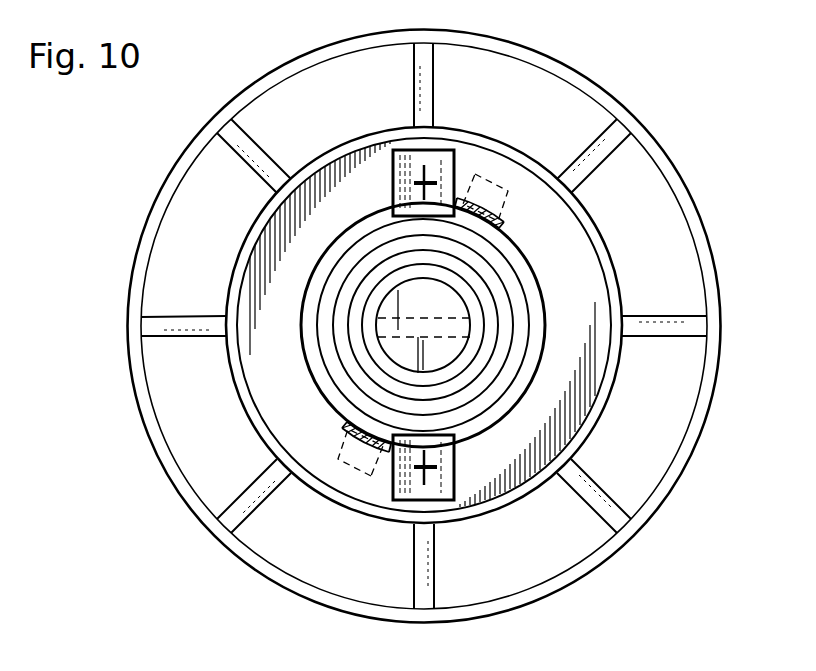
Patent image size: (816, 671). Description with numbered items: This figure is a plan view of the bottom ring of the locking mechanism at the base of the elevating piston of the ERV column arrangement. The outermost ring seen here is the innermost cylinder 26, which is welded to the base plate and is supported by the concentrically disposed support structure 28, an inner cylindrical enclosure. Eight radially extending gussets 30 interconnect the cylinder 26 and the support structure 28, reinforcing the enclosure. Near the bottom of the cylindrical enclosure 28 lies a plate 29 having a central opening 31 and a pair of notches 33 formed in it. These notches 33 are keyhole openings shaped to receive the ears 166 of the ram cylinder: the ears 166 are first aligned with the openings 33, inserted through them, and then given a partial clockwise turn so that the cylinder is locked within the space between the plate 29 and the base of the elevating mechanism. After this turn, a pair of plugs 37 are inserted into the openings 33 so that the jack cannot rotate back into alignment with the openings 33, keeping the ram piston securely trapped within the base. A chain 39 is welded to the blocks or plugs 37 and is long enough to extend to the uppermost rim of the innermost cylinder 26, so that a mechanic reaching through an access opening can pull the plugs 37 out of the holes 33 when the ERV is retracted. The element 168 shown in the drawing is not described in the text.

The innermost cylinder 26 is at (628, 118).
The support structure 28 is at (610, 268).
The plate 29 is at (592, 233).
The gussets 30 is at (607, 143).
The central opening 31 is at (540, 305).
The notches 33 is at (403, 318).
The plugs 37 is at (436, 165).
The chain 39 is at (422, 180).
The ears 166 is at (484, 182).
The key segment 168 is at (483, 270).